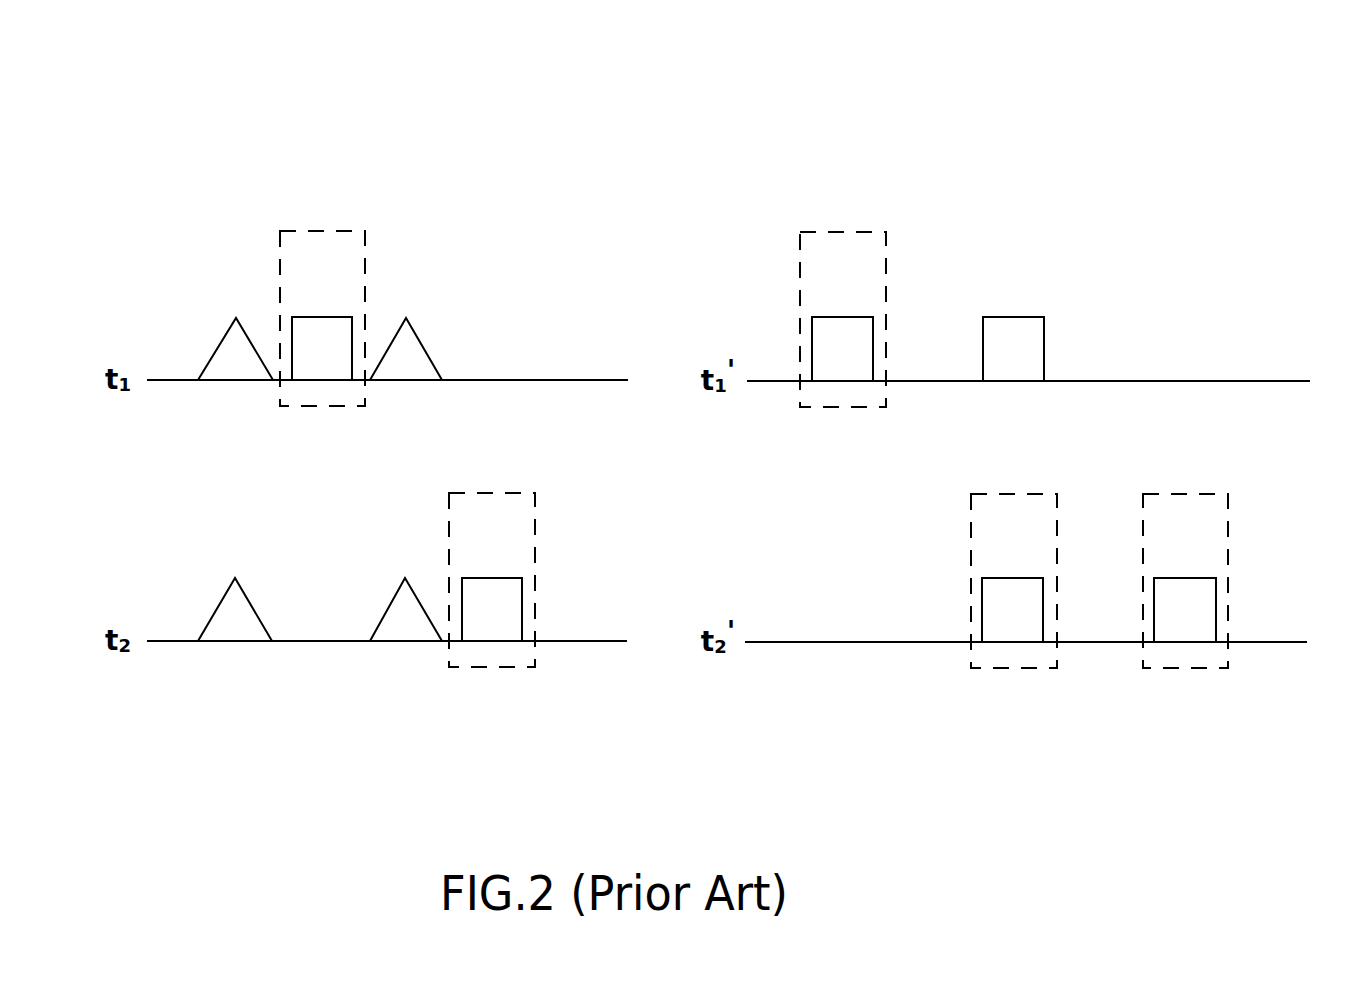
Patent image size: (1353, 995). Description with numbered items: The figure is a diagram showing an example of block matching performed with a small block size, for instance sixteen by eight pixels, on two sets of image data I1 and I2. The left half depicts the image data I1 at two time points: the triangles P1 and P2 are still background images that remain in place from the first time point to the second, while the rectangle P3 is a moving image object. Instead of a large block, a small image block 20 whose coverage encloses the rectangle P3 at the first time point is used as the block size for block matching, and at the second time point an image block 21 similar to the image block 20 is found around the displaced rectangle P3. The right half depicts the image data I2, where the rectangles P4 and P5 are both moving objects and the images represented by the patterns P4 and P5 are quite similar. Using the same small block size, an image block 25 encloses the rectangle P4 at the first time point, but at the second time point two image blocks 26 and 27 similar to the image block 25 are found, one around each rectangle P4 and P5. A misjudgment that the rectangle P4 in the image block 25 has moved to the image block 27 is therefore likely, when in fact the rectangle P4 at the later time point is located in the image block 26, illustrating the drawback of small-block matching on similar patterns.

The image block 20 is at (330, 231).
The image block 21 is at (500, 493).
The image block 25 is at (848, 232).
The image block 26 is at (1020, 494).
The image block 27 is at (1190, 494).
The triangle P1 is at (236, 318).
The triangle P2 is at (406, 318).
The rectangle P3 is at (322, 317).
The rectangle P4 is at (840, 317).
The rectangle P5 is at (1012, 317).
The image data I1 is at (465, 150).
The image data I2 is at (1105, 150).